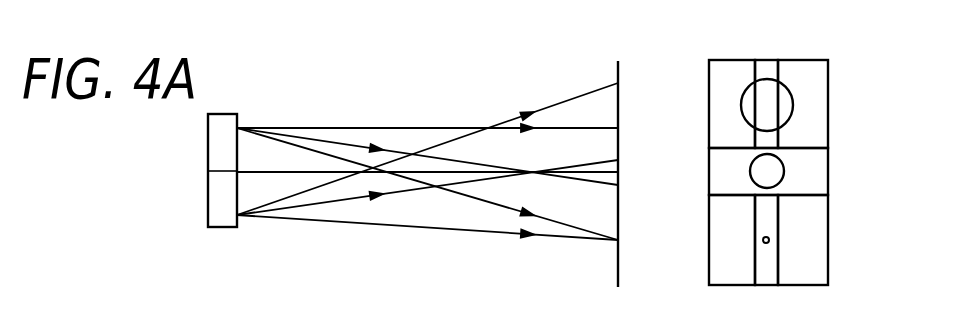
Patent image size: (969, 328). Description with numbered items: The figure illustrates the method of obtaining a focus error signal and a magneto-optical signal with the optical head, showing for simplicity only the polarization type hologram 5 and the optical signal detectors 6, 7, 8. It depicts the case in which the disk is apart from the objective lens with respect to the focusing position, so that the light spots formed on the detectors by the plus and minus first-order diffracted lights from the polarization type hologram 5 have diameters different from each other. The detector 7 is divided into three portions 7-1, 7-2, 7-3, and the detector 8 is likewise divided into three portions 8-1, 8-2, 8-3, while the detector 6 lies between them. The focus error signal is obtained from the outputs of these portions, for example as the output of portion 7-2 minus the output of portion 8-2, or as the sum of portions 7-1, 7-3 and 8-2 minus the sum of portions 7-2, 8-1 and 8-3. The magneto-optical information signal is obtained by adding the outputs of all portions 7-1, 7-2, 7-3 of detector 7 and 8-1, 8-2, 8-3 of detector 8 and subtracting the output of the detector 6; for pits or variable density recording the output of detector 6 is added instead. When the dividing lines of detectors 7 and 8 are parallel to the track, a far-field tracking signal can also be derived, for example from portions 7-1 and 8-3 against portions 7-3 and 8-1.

The polarization type hologram 5 is at (222, 227).
The optical signal detector 6 is at (709, 169).
The optical signal detector 7 is at (755, 79).
The portion of detector 7 7-1 is at (724, 62).
The portion of detector 7 7-2 is at (769, 62).
The portion of detector 7 7-3 is at (810, 64).
The optical signal detector 8 is at (757, 261).
The portion of detector 8 8-1 is at (722, 284).
The portion of detector 8 8-2 is at (767, 285).
The portion of detector 8 8-3 is at (812, 284).